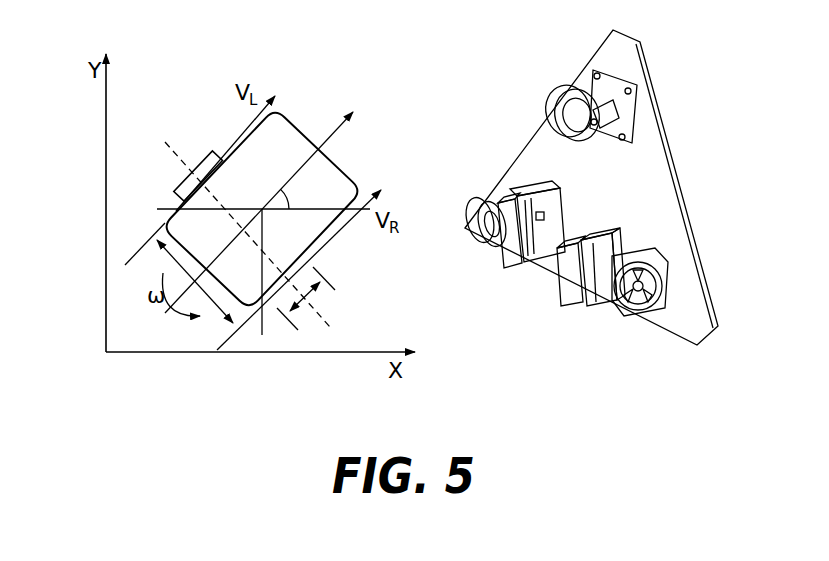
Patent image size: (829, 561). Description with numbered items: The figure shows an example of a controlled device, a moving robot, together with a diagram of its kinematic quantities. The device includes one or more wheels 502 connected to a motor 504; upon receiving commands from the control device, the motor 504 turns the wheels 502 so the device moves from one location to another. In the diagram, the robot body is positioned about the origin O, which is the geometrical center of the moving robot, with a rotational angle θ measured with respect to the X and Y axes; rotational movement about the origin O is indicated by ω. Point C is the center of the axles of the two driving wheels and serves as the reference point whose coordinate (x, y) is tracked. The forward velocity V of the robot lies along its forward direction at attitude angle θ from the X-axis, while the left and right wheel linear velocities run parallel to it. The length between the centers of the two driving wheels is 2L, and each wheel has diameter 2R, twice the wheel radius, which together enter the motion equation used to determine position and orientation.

The wheels 502 is at (613, 317).
The motor 504 is at (563, 200).
The origin O is at (263, 260).
The point C is at (247, 234).
The forward velocity V is at (266, 212).
The length between centers of the two driving wheels 2L is at (179, 273).
The wheel diameter 2R is at (314, 298).